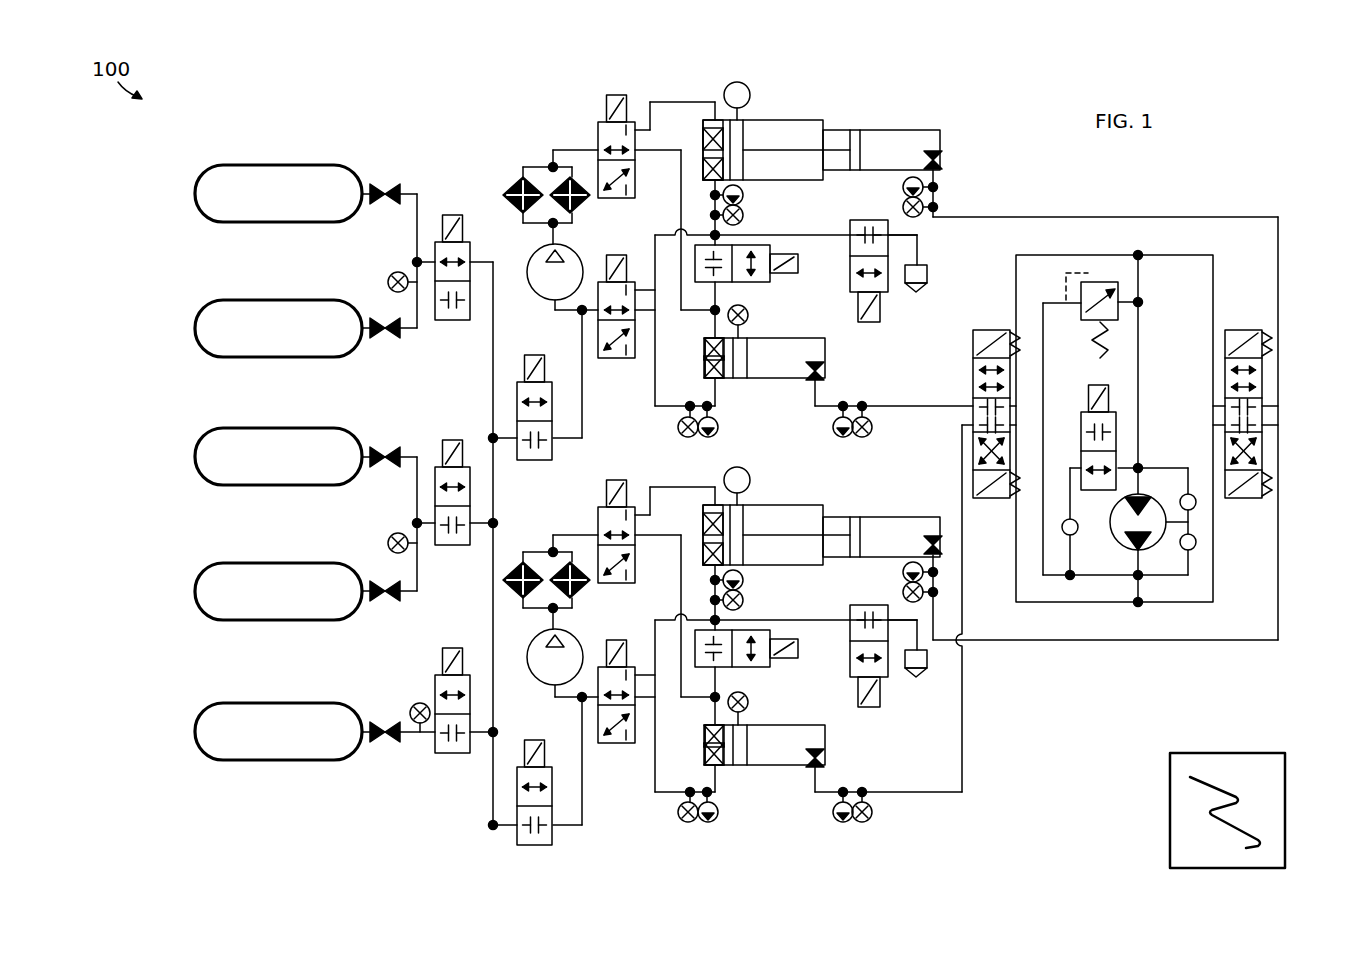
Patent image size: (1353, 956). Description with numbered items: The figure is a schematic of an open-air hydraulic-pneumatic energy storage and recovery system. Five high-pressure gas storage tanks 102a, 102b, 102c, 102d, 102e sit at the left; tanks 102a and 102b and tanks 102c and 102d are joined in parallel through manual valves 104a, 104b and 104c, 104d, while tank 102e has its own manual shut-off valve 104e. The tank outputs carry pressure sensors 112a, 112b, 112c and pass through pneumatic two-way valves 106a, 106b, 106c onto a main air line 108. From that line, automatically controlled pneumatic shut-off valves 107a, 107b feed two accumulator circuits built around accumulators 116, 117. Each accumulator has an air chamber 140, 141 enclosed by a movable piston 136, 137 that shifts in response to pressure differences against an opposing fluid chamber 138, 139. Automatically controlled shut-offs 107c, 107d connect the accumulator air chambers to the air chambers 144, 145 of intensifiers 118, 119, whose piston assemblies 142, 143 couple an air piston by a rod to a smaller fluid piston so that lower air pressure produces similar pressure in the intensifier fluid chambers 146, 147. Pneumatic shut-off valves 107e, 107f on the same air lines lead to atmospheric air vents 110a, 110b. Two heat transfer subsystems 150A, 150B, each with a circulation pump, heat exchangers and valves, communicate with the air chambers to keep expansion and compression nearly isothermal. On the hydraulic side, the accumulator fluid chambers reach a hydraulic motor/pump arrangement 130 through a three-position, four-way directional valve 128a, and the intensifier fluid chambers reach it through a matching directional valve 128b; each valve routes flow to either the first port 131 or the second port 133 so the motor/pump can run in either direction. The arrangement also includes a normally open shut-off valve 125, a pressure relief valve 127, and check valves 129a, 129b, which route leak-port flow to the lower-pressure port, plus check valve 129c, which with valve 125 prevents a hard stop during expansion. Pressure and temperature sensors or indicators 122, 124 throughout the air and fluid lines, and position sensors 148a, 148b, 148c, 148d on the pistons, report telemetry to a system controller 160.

The high-pressure gas/air storage tank 102a is at (278, 193).
The high-pressure gas/air storage tank 102b is at (278, 328).
The high-pressure gas/air storage tank 102c is at (278, 456).
The high-pressure gas/air storage tank 102d is at (278, 591).
The high-pressure gas/air storage tank 102e is at (278, 731).
The manual valve 104a is at (385, 185).
The manual valve 104b is at (385, 338).
The manual valve 104c is at (385, 448).
The manual valve 104d is at (385, 601).
The manual shut-off valve 104e is at (385, 742).
The pneumatic two-way valve 106a is at (445, 215).
The pneumatic two-way valve 106b is at (445, 440).
The pneumatic two-way valve 106c is at (445, 648).
The automatically controlled pneumatic shut-off valve 107a is at (529, 355).
The automatically controlled pneumatic shut-off valve 107b is at (529, 740).
The automatically controlled pneumatic shut-off 107c is at (720, 284).
The automatically controlled pneumatic shut-off 107d is at (722, 628).
The pneumatic shut-off valve 107e is at (888, 292).
The pneumatic shut-off valve 107f is at (882, 705).
The main air line 108 is at (493, 492).
The atmospheric air vent 110a is at (928, 272).
The atmospheric air vent 110b is at (925, 680).
The pressure sensor 112a is at (388, 279).
The pressure sensor 112b is at (388, 540).
The pressure sensor 112c is at (411, 706).
The accumulator 116 is at (770, 380).
The accumulator 117 is at (808, 793).
The intensifier 118 is at (845, 130).
The intensifier 119 is at (823, 513).
The pressure and temperature sensor 122 is at (745, 196).
The pressure and temperature sensor 124 is at (745, 216).
The normally open shut-off valve 125 is at (1110, 388).
The pressure relief valve 127 is at (1101, 282).
The hydraulic valve 128a is at (973, 376).
The hydraulic valve 128b is at (1262, 410).
The check valve 129a is at (1196, 505).
The check valve 129b is at (1196, 543).
The check valve 129c is at (1078, 530).
The hydraulic motor/pump arrangement 130 is at (1150, 545).
The first port 131 is at (1140, 497).
The second port 133 is at (1146, 575).
The movable piston 136 is at (750, 360).
The movable piston 137 is at (750, 747).
The fluid chamber 138 is at (825, 371).
The fluid chamber 139 is at (825, 752).
The air chamber 140 is at (705, 353).
The air chamber 141 is at (705, 740).
The piston assembly 142 is at (745, 138).
The piston assembly 143 is at (745, 523).
The air chamber 144 is at (703, 143).
The air chamber 145 is at (703, 530).
The intensifier fluid chamber 146 is at (912, 134).
The intensifier fluid chamber 147 is at (922, 530).
The position sensor 148a is at (737, 82).
The position sensor 148b is at (750, 315).
The position sensor 148c is at (750, 480).
The position sensor 148d is at (750, 702).
The heat transfer subsystem 150A is at (516, 156).
The heat transfer subsystem 150B is at (608, 778).
The system controller 160 is at (1228, 752).